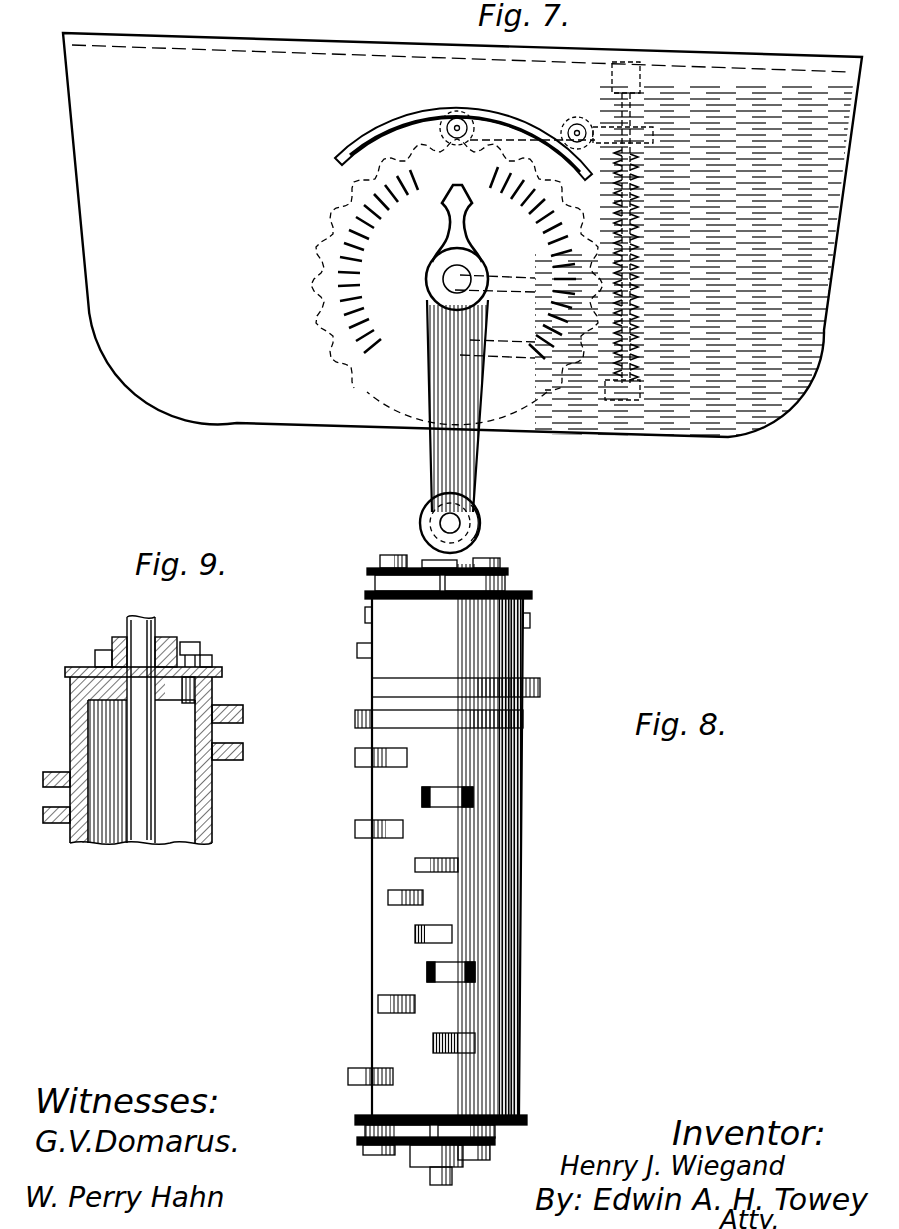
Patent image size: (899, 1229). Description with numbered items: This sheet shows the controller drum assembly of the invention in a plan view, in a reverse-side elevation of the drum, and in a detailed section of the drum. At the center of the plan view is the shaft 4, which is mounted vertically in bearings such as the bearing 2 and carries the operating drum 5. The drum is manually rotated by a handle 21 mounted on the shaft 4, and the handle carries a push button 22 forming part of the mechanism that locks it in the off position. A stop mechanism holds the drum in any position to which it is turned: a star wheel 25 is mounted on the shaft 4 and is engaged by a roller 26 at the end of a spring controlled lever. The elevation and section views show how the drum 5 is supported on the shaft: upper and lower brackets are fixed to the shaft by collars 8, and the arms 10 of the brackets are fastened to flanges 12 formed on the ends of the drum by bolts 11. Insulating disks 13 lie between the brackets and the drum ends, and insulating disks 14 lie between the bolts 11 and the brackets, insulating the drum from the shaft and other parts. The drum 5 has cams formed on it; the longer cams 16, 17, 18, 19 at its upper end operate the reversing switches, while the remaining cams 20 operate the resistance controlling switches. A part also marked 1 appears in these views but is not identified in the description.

In FIG. 8, the shaft 1 is at (441, 1185).
In FIG. 9, the shaft 1 is at (145, 805).
In FIG. 7, the bearing 2 is at (654, 249).
In FIG. 7, the shaft 4 is at (457, 279).
In FIG. 8, the operating drum 5 is at (505, 770).
In FIG. 9, the operating drum 5 is at (205, 800).
In FIG. 8, the collar 8 is at (405, 1180).
In FIG. 9, the collar 8 is at (115, 637).
In FIG. 8, the bracket arm 10 is at (525, 1140).
In FIG. 9, the bracket arm 10 is at (240, 635).
In FIG. 8, the bolt 11 is at (490, 1175).
In FIG. 9, the bolt 11 is at (195, 645).
In FIG. 9, the flange 12 is at (105, 690).
In FIG. 8, the insulating disk 13 is at (545, 1102).
In FIG. 9, the insulating disk 13 is at (222, 672).
In FIG. 8, the insulating disk 14 is at (340, 1165).
In FIG. 9, the insulating disk 14 is at (178, 650).
In FIG. 8, the cam 16 is at (365, 614).
In FIG. 9, the cam 16 is at (243, 712).
In FIG. 8, the cam 17 is at (357, 650).
In FIG. 9, the cam 17 is at (243, 750).
In FIG. 8, the cam 18 is at (540, 690).
In FIG. 9, the cam 18 is at (58, 772).
In FIG. 8, the cam 19 is at (523, 720).
In FIG. 9, the cam 19 is at (55, 823).
In FIG. 8, the cam 20 is at (445, 1033).
In FIG. 7, the handle 21 is at (470, 462).
In FIG. 7, the push button 22 is at (451, 525).
In FIG. 7, the star wheel 25 is at (332, 222).
In FIG. 7, the roller 26 is at (442, 113).